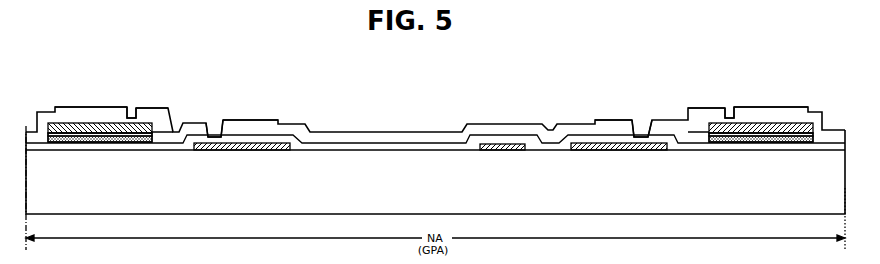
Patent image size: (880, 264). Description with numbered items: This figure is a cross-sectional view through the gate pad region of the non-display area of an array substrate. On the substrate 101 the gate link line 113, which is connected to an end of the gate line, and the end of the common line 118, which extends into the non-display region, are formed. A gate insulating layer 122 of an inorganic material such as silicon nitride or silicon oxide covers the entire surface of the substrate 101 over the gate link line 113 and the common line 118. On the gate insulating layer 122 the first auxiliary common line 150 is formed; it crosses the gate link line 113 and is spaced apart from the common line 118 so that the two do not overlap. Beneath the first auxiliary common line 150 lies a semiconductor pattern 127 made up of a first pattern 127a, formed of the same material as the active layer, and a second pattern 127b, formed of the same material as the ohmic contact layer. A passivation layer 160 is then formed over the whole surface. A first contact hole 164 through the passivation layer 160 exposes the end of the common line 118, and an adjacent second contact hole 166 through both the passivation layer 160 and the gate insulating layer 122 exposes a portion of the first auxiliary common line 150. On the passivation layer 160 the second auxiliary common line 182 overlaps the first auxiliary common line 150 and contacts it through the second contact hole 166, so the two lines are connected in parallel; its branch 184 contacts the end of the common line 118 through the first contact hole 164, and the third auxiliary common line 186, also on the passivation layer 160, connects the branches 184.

The substrate 101 is at (821, 207).
The gate link line 113 is at (502, 151).
The common line 118 is at (236, 151).
The gate insulating layer 122 is at (377, 150).
The semiconductor pattern 127 is at (108, 196).
The first pattern 127a is at (97, 142).
The second pattern 127b is at (123, 138).
The first auxiliary common line 150 is at (73, 122).
The passivation layer 160 is at (425, 137).
The first contact hole 164 is at (216, 110).
The second contact hole 166 is at (133, 99).
The second auxiliary common line 182 is at (103, 107).
The branch 184 is at (157, 108).
The third auxiliary common line 186 is at (258, 119).